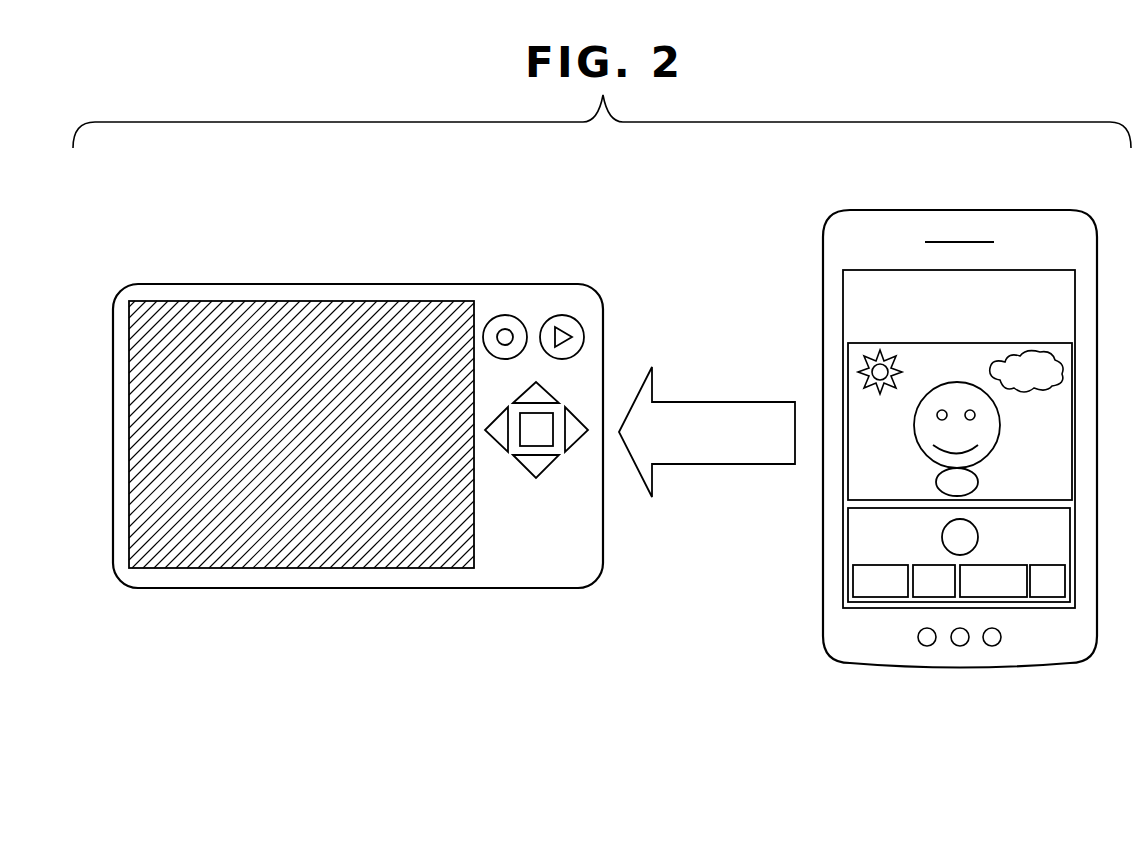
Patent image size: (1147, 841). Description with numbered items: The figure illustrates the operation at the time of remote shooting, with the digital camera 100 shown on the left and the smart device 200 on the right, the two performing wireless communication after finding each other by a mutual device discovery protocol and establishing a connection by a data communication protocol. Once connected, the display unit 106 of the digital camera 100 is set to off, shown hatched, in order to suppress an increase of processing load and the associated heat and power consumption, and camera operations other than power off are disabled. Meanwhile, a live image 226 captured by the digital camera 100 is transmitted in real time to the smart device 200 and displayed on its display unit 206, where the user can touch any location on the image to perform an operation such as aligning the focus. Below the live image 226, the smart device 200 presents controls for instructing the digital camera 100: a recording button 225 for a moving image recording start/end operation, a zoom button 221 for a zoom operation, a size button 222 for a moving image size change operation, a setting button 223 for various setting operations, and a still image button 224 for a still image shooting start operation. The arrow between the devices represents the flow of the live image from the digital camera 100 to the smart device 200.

The digital camera 100 is at (457, 284).
The display unit 106 is at (258, 570).
The smart device 200 is at (876, 208).
The display unit 206 is at (843, 297).
The live image 226 is at (850, 490).
The recording button 225 is at (942, 538).
The zoom button 221 is at (872, 598).
The size button 222 is at (923, 598).
The setting button 223 is at (1003, 598).
The still image button 224 is at (1048, 598).